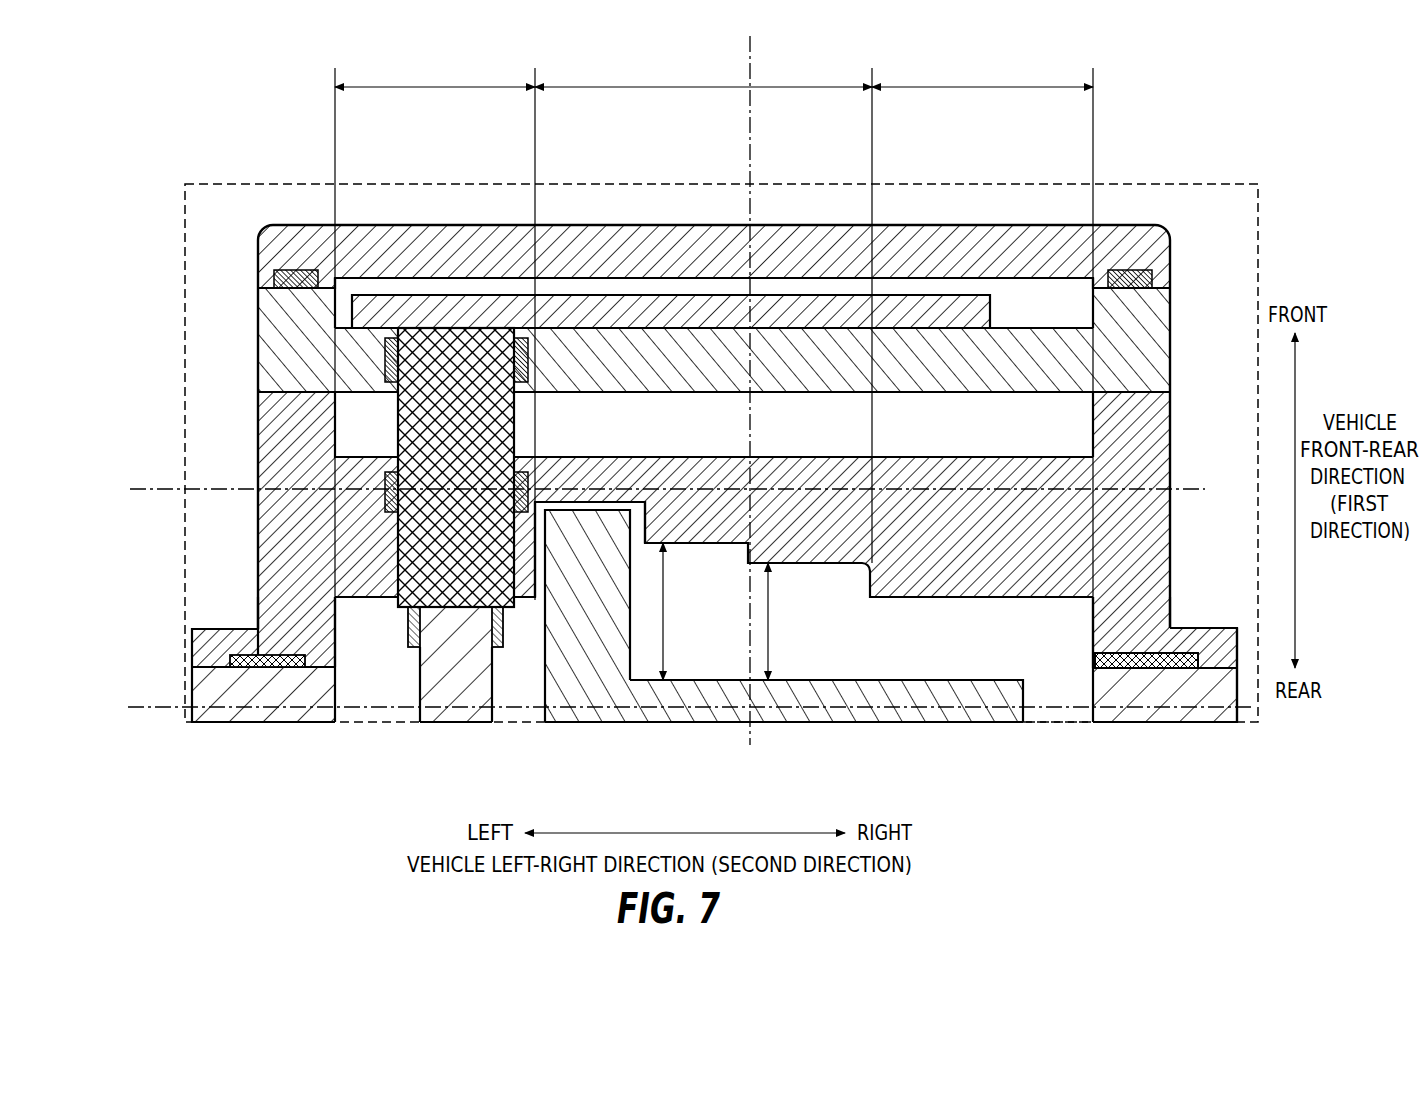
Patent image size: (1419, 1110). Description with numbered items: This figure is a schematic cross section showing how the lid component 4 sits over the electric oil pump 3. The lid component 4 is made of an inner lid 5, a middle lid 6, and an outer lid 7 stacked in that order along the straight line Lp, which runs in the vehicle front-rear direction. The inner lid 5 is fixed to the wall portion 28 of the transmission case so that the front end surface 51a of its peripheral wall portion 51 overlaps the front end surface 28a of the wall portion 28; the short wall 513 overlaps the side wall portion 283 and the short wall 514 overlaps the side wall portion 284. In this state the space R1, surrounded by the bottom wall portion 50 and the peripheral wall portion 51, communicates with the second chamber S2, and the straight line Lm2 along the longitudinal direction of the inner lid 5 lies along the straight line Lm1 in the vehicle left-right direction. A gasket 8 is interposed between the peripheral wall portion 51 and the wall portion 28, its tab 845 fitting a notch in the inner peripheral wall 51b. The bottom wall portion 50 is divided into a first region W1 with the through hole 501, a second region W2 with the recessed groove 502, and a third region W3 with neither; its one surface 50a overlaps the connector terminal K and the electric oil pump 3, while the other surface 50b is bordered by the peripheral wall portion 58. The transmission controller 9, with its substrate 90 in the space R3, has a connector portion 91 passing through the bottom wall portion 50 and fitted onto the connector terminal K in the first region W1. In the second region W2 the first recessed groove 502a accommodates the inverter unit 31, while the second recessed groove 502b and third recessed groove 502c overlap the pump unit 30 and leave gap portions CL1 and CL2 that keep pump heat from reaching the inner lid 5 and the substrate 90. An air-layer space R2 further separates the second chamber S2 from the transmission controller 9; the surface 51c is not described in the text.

The electric oil pump 3 is at (948, 736).
The lid component 4 is at (635, 473).
The inner lid 5 is at (653, 557).
The middle lid 6 is at (255, 343).
The outer lid 7 is at (255, 258).
The gasket 8 is at (287, 654).
The transmission controller 9 is at (483, 291).
The wall portion 28 is at (184, 705).
The front end surface 28a is at (215, 629).
The pump unit 30 is at (775, 724).
The inverter unit 31 is at (598, 724).
The bottom wall portion 50 is at (836, 457).
The one surface 50a is at (917, 599).
The other surface 50b is at (1003, 457).
The peripheral wall portion 51 is at (1237, 626).
The front end surface 51a is at (190, 683).
The inner peripheral wall 51b is at (318, 671).
The mounting plate left portion 51c is at (205, 671).
The peripheral wall portion 58 is at (1145, 426).
The substrate 90 is at (667, 322).
The connector portion 91 is at (407, 608).
The side wall portion 283 is at (337, 689).
The side wall portion 284 is at (1157, 724).
The through hole 501 is at (421, 706).
The recessed groove 502 is at (638, 514).
The first recessed groove 502a is at (580, 502).
The second recessed groove 502b is at (685, 543).
The third recessed groove 502c is at (792, 563).
The short wall 513 is at (258, 598).
The short wall 514 is at (1172, 589).
The tab 845 is at (1096, 659).
The connector terminal K is at (458, 724).
The second chamber S2 is at (1058, 724).
The straight line Lp is at (750, 375).
The straight line Lm1 is at (668, 704).
The straight line Lm2 is at (645, 487).
The first region W1 is at (435, 387).
The second region W2 is at (703, 326).
The third region W3 is at (982, 387).
The gap portion CL1 is at (688, 611).
The gap portion CL2 is at (792, 621).
The space R1 is at (992, 658).
The space R2 is at (910, 446).
The space R3 is at (1055, 316).